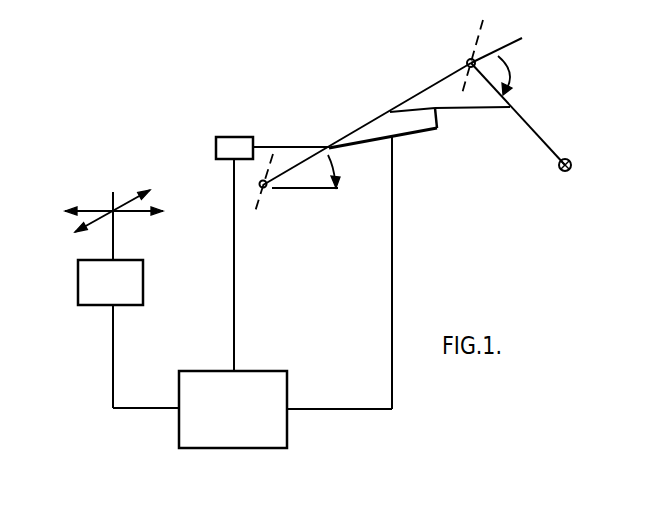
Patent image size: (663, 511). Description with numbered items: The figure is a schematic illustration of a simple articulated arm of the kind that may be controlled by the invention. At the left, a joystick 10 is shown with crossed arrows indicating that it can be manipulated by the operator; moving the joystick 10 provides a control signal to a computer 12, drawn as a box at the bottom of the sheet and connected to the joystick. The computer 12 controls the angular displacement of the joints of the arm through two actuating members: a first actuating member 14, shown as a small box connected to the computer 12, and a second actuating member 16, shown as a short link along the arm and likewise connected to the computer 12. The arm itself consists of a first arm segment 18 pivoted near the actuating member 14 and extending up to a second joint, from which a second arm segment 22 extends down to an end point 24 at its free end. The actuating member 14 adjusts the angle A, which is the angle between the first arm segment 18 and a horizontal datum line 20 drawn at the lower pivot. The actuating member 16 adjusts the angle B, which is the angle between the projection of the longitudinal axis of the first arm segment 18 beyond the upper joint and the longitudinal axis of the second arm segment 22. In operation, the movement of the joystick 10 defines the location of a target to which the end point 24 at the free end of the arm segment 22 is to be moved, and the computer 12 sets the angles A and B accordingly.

The joystick 10 is at (95, 222).
The computer 12 is at (275, 421).
The actuating member 14 is at (240, 143).
The actuating member 16 is at (417, 127).
The first arm segment 18 is at (432, 85).
The datum line 20 is at (297, 190).
The arm segment 22 is at (530, 127).
The end point 24 is at (573, 165).
The angle A is at (340, 166).
The angle B is at (512, 72).